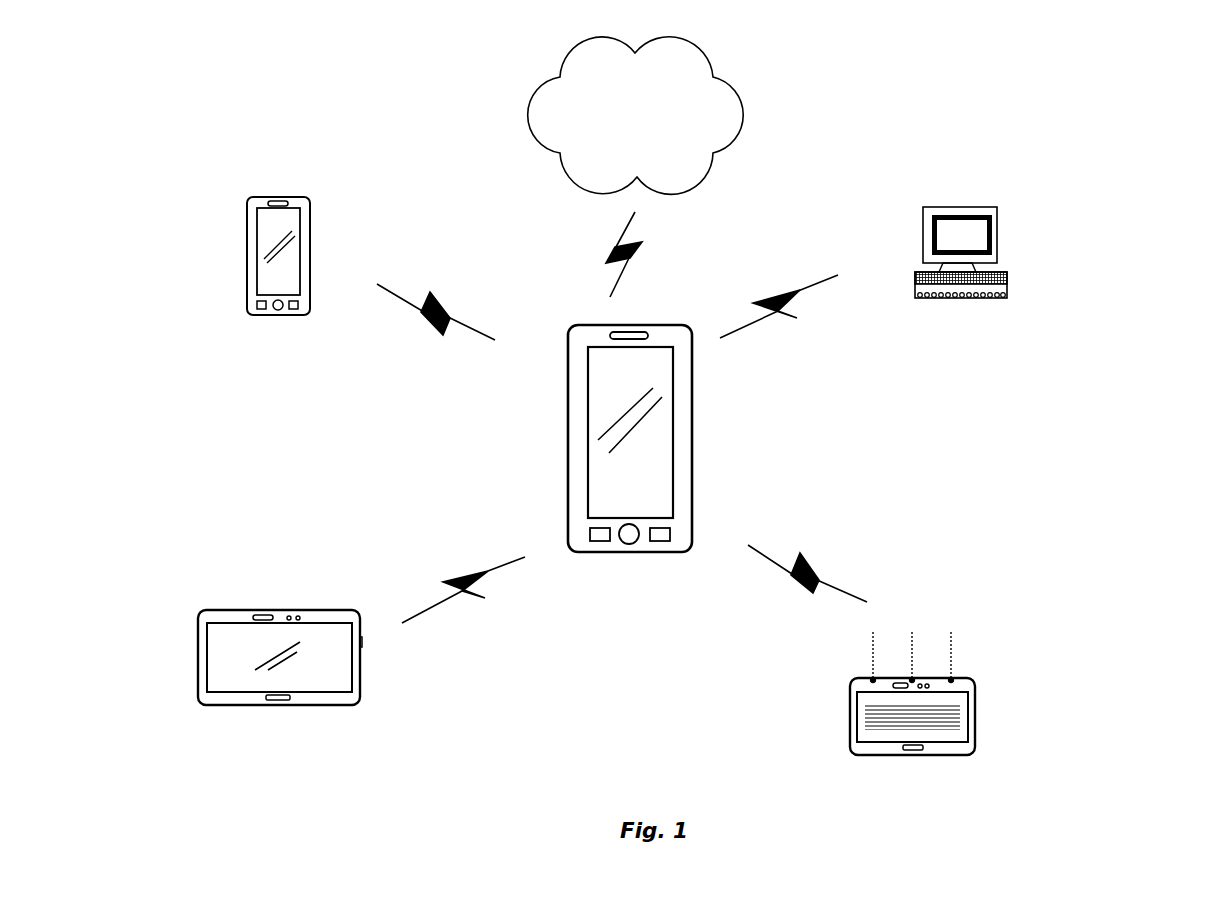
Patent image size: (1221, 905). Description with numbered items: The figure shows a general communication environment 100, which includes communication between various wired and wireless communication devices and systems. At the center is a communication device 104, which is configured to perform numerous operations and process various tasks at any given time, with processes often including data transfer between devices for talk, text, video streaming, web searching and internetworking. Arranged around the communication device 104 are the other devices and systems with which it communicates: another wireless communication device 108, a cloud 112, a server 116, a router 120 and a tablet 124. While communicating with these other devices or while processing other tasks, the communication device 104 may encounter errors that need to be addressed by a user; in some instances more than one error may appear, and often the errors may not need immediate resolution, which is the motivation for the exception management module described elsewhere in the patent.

The communication environment 100 is at (1135, 113).
The communication device 104 is at (568, 438).
The wireless communication device 108 is at (310, 255).
The cloud 112 is at (747, 115).
The server 116 is at (1007, 283).
The router 120 is at (975, 713).
The tablet 124 is at (279, 610).